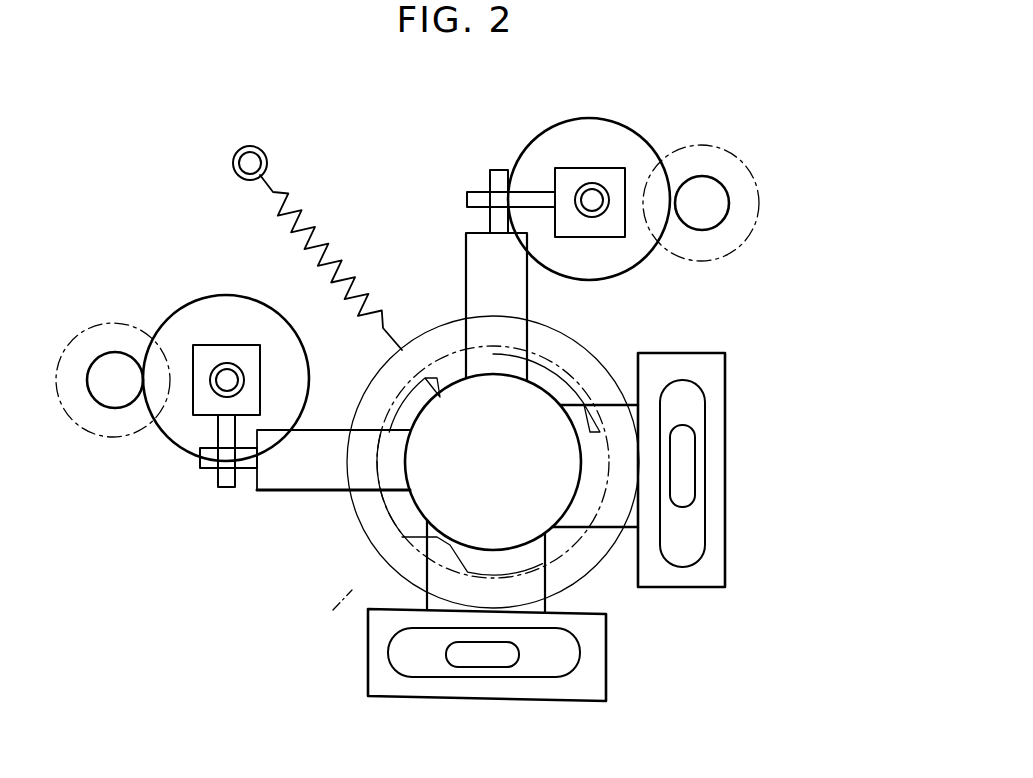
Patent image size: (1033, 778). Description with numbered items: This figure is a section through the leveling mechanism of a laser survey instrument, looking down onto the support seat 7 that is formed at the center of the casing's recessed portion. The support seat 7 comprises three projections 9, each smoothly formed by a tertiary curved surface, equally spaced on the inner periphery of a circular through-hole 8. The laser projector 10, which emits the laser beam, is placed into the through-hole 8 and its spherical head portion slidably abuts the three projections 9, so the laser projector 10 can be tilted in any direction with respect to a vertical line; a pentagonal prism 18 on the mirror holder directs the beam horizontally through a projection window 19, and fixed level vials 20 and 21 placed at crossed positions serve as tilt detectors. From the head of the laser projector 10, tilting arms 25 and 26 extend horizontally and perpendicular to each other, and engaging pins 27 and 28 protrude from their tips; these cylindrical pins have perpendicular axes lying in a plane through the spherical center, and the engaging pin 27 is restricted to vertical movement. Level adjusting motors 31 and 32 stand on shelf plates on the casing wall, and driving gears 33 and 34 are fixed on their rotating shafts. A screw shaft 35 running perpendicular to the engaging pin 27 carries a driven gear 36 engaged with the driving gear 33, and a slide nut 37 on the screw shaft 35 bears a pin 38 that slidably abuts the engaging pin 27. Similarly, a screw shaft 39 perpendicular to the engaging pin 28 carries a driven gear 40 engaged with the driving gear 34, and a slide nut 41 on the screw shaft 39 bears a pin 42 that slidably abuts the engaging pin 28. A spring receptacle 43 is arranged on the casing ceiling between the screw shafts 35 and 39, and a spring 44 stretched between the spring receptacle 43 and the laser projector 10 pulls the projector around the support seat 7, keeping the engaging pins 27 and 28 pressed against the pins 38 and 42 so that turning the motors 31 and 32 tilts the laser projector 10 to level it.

The support seat 7 is at (366, 548).
The circular through-hole 8 is at (413, 408).
The projections 9 is at (607, 373).
The laser projector 10 is at (568, 380).
The pentagonal prism 18 is at (285, 493).
The projection window 19 is at (463, 252).
The fixed level vial 20 is at (567, 667).
The fixed level vial 21 is at (692, 543).
The tilting arm 25 is at (330, 472).
The tilting arm 26 is at (503, 288).
The engaging pin 27 is at (207, 475).
The engaging pin 28 is at (499, 170).
The level adjusting motor 31 is at (72, 423).
The level adjusting motor 32 is at (742, 162).
The driving gear 33 is at (115, 410).
The driving gear 34 is at (729, 207).
The screw shaft 35 is at (218, 373).
The driven gear 36 is at (188, 435).
The slide nut 37 is at (244, 357).
The pin 38 is at (225, 490).
The screw shaft 39 is at (603, 185).
The driven gear 40 is at (603, 117).
The slide nut 41 is at (626, 170).
The pin 42 is at (468, 192).
The spring receptacle 43 is at (248, 146).
The spring 44 is at (305, 227).